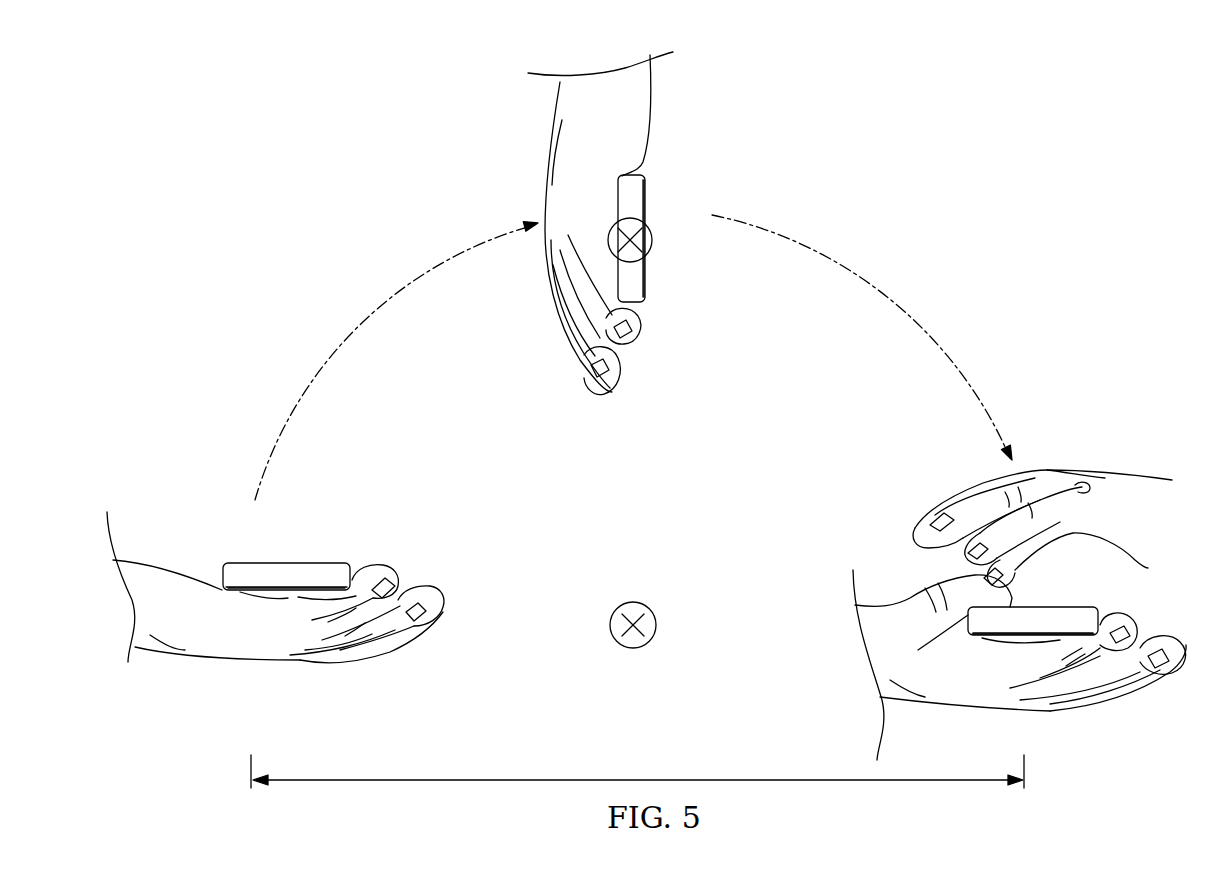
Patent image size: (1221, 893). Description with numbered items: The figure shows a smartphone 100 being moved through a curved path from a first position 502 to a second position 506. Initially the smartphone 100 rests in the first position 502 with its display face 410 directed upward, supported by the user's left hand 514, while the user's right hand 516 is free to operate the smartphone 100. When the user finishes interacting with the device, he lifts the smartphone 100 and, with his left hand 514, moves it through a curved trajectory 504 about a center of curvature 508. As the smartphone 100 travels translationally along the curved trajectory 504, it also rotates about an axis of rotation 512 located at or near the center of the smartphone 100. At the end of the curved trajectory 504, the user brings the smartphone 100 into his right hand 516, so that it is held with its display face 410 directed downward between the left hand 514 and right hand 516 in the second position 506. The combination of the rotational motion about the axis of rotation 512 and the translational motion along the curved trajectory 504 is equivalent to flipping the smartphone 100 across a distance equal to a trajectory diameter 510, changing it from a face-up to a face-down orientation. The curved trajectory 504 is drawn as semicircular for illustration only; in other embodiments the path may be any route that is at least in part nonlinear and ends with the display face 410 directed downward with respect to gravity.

The smartphone 100 is at (335, 586).
The display face 410 is at (300, 562).
The first position 502 is at (171, 764).
The curved trajectory 504 is at (328, 366).
The second position 506 is at (1124, 763).
The center of curvature 508 is at (609, 625).
The trajectory diameter 510 is at (683, 777).
The axis of rotation 512 is at (624, 223).
The left hand 514 is at (232, 662).
The right hand 516 is at (989, 706).